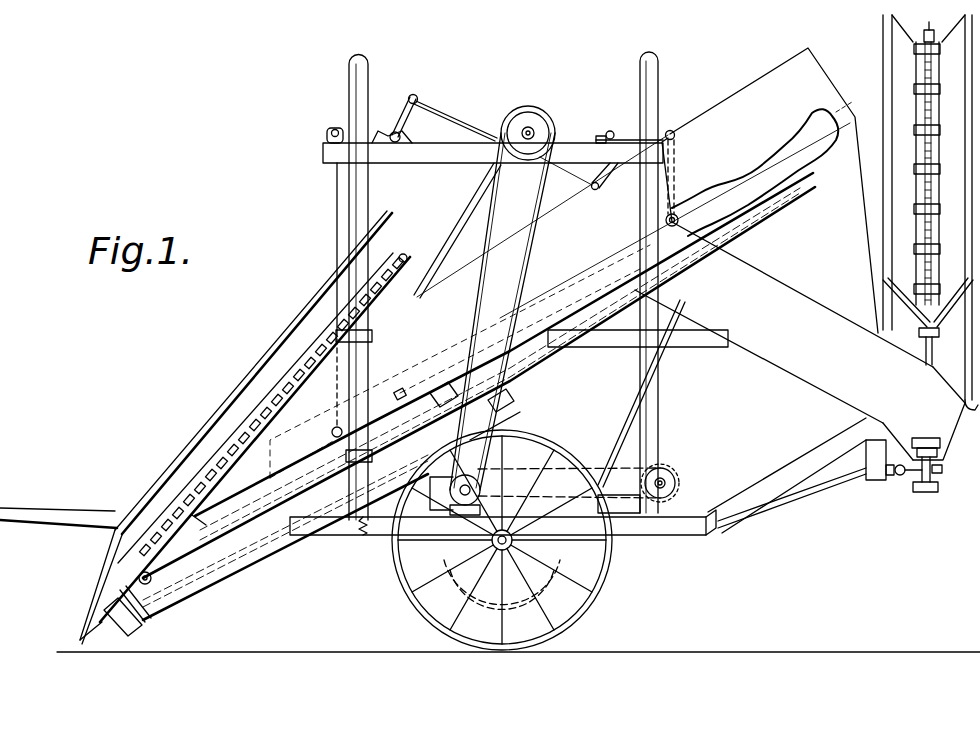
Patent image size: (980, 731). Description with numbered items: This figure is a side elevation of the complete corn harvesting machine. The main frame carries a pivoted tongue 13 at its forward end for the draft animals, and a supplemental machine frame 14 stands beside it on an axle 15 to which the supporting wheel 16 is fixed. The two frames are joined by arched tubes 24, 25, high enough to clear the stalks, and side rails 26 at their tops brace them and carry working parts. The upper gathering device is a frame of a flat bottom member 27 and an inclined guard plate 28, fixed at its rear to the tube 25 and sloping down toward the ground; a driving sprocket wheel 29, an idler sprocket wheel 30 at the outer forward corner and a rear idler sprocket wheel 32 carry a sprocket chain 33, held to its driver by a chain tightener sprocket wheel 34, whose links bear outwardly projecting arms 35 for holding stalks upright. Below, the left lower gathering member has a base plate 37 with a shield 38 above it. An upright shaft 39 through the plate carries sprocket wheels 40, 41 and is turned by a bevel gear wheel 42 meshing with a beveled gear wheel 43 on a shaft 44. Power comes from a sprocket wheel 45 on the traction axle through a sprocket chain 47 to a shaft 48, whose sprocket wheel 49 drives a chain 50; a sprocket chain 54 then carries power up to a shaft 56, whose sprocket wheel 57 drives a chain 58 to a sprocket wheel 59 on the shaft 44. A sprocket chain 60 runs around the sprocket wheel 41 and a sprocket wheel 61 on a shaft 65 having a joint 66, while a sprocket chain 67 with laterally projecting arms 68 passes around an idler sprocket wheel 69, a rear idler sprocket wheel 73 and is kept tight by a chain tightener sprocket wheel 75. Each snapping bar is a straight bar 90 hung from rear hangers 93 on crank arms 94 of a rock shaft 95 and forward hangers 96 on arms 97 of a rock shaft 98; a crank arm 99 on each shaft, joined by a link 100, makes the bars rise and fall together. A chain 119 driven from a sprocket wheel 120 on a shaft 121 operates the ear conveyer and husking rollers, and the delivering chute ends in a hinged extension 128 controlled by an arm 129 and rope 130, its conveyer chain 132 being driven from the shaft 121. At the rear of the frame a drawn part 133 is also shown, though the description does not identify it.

The pivoted tongue 13 is at (40, 513).
The supplemental machine frame 14 is at (358, 528).
The axle 15 is at (394, 562).
The supporting wheel 16 is at (403, 590).
The arched tube 24 is at (658, 82).
The arched tube 25 is at (350, 86).
The side rails 26 is at (335, 151).
The flat bottom member 27 is at (222, 474).
The guard plate 28 is at (186, 456).
The driving sprocket wheel 29 is at (112, 552).
The idler sprocket wheel 30 is at (124, 606).
The idler sprocket wheel 32 is at (390, 250).
The sprocket chain 33 is at (357, 298).
The chain tightener sprocket wheel 34 is at (240, 526).
The outwardly projecting arms 35 is at (398, 251).
The base plate 37 is at (776, 208).
The shield 38 is at (784, 235).
The upright shaft 39 is at (400, 390).
The sprocket wheel 40 is at (437, 385).
The sprocket wheel 41 is at (507, 391).
The bevel gear wheel 42 is at (494, 430).
The beveled gear wheel 43 is at (416, 490).
The shaft 44 is at (481, 478).
The sprocket wheel 45 is at (507, 593).
The sprocket chain 47 is at (612, 565).
The shaft 48 is at (678, 467).
The sprocket wheel 49 is at (665, 462).
The chain 50 is at (567, 481).
The sprocket chain 54 is at (468, 197).
The shaft 56 is at (530, 127).
The sprocket wheel 57 is at (538, 120).
The chain 58 is at (536, 242).
The sprocket wheel 59 is at (456, 512).
The sprocket chain 60 is at (253, 550).
The sprocket wheel 61 is at (146, 610).
The shaft 65 is at (193, 588).
The joint 66 is at (153, 575).
The sprocket chain 67 is at (282, 535).
The laterally projecting arms 68 is at (805, 170).
The idler sprocket wheel 69 is at (250, 515).
The idler sprocket wheel 73 is at (805, 206).
The chain tightener sprocket wheel 75 is at (500, 365).
The straight bar 90 is at (767, 160).
The hangers 93 is at (678, 212).
The crank arms 94 is at (673, 130).
The rock shaft 95 is at (610, 131).
The hangers 96 is at (336, 189).
The arms 97 is at (404, 127).
The rock shaft 98 is at (413, 137).
The crank arm 99 is at (419, 99).
The link 100 is at (462, 115).
The chain 119 is at (660, 369).
The sprocket wheel 120 is at (668, 520).
The shaft 121 is at (653, 455).
The hinged extension 128 is at (893, 60).
The arm 129 is at (884, 294).
The rope 130 is at (926, 342).
The conveyer chain 132 is at (928, 182).
The draw bar 133 is at (838, 478).